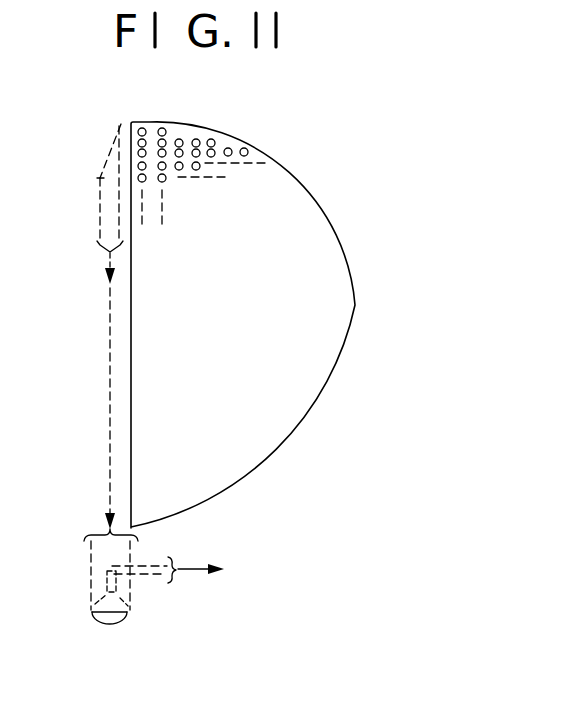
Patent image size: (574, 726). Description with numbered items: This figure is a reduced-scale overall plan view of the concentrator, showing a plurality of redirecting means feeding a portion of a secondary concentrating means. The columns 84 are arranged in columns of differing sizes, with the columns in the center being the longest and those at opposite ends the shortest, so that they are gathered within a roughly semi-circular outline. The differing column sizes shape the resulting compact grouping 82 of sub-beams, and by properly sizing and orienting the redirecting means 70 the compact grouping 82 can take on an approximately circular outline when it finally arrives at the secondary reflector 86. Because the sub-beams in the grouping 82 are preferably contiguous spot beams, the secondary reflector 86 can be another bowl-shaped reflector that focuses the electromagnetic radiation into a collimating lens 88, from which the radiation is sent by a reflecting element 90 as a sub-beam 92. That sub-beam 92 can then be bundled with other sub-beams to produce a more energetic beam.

The redirecting means 70 is at (82, 144).
The compact grouping 82 is at (110, 468).
The columns 84 is at (218, 132).
The secondary reflector 86 is at (113, 626).
The collimating lens 88 is at (112, 592).
The reflecting element 90 is at (108, 567).
The sub-beam 92 is at (167, 574).